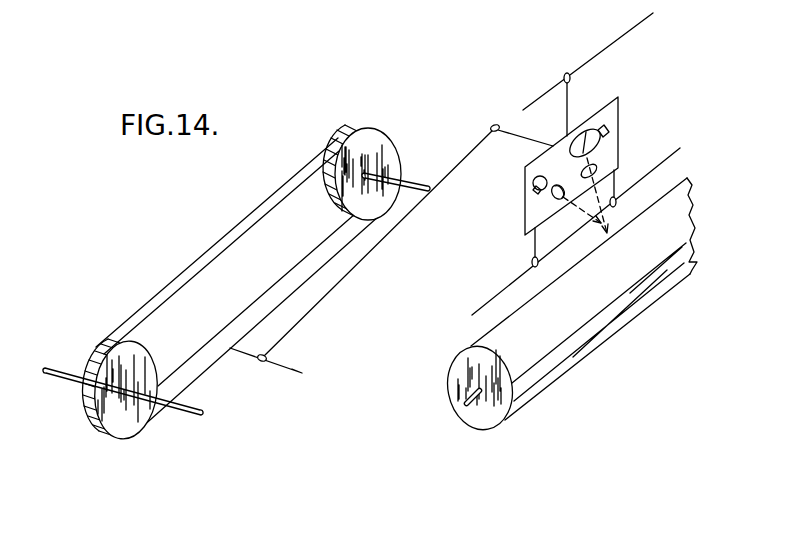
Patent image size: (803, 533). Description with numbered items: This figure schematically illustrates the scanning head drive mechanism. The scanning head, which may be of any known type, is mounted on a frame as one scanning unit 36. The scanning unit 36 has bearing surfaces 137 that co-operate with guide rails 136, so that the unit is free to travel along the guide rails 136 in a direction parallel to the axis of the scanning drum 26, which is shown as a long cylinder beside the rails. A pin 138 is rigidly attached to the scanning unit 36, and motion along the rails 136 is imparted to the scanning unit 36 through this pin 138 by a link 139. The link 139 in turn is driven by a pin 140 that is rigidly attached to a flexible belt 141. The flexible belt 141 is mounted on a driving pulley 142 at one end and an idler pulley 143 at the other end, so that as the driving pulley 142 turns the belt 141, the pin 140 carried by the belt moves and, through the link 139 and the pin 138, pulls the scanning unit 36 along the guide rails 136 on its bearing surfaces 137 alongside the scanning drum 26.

The scanning drum 26 is at (448, 369).
The scanning unit 36 is at (533, 186).
The guide rails 136 is at (612, 47).
The bearing surfaces 137 is at (564, 77).
The pin 138 is at (491, 127).
The link 139 is at (362, 264).
The pin 140 is at (279, 360).
The flexible belt 141 is at (198, 370).
The driving pulley 142 is at (143, 425).
The idler pulley 143 is at (373, 165).